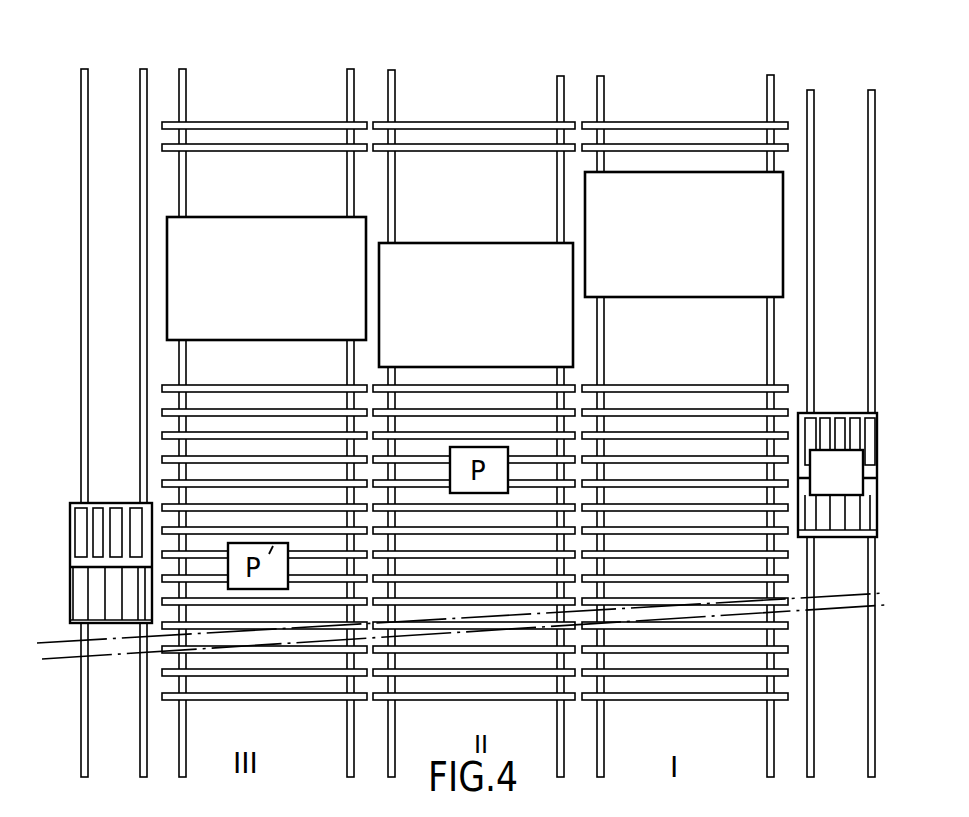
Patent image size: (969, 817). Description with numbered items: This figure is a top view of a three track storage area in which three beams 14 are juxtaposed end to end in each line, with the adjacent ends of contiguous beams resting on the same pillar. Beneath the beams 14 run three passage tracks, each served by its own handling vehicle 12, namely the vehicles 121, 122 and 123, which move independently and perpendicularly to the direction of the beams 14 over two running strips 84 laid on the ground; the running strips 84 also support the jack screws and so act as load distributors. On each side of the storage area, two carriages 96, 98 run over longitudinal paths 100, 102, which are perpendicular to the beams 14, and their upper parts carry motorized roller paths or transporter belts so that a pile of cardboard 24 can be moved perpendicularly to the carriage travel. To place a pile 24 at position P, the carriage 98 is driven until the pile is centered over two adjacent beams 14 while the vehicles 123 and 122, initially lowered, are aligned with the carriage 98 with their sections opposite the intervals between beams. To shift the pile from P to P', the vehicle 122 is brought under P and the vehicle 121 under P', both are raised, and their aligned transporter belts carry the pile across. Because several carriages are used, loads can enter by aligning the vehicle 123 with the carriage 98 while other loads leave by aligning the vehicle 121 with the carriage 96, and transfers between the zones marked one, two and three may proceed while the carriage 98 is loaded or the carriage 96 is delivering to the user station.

The running strips 84 is at (605, 97).
The left transport track 100 is at (111, 423).
The longitudinal path 102 is at (837, 433).
The carriage 96 is at (126, 578).
The carriage 98 is at (837, 501).
The pile of cardboard 24 is at (851, 487).
The beams 14 is at (646, 412).
The handling vehicle 12 is at (475, 269).
The handling vehicle 121 is at (266, 299).
The handling vehicle 122 is at (477, 326).
The handling vehicle 123 is at (684, 248).